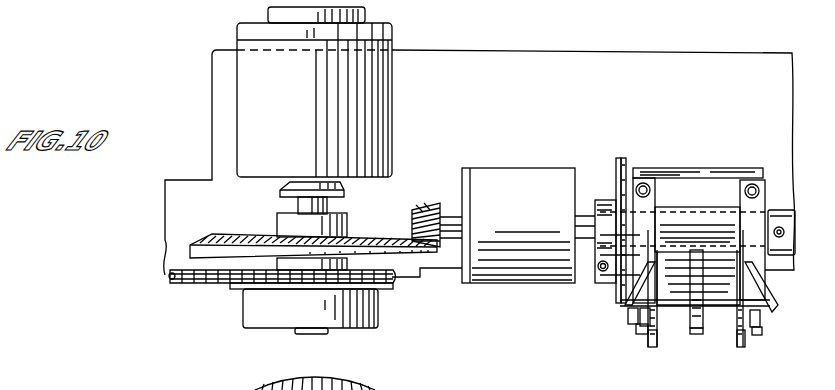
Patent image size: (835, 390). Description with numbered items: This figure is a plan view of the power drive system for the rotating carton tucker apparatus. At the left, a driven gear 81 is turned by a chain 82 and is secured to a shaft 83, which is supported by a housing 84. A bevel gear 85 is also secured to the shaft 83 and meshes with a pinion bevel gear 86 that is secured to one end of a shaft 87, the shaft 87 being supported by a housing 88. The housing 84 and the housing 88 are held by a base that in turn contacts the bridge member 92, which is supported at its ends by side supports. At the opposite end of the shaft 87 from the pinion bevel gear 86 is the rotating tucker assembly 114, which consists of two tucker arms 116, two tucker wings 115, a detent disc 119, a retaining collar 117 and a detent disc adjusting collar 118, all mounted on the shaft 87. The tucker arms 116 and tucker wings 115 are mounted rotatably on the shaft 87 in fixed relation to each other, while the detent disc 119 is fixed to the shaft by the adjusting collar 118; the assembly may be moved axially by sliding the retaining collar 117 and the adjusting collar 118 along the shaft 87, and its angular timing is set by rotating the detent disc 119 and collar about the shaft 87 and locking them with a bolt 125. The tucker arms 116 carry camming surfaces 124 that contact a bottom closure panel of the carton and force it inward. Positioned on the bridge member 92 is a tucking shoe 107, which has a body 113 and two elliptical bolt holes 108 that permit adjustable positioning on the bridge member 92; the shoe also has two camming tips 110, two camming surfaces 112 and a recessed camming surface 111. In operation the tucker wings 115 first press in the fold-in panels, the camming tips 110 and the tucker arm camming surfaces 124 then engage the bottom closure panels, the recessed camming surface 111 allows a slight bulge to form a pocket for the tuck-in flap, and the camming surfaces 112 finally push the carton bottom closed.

The driven gear 81 is at (268, 287).
The chain 82 is at (188, 287).
The shaft 83 is at (302, 206).
The housing 84 is at (380, 113).
The bevel gear 85 is at (195, 243).
The pinion bevel gear 86 is at (427, 212).
The shaft 87 is at (450, 213).
The housing 88 is at (510, 182).
The bridge member 92 is at (506, 62).
The tucking shoe 107 is at (680, 310).
The elliptical bolt holes 108 is at (660, 185).
The camming tips 110 is at (636, 316).
The recessed camming surface 111 is at (705, 332).
The camming surfaces 112 is at (638, 326).
The body 113 is at (705, 170).
The tucker assembly 114 is at (670, 215).
The tucker wings 115 is at (625, 292).
The tucker arms 116 is at (648, 340).
The retaining collar 117 is at (781, 210).
The detent disc adjusting collar 118 is at (616, 175).
The detent disc 119 is at (624, 160).
The tucker arm camming surfaces 124 is at (652, 348).
The bolt 125 is at (600, 270).